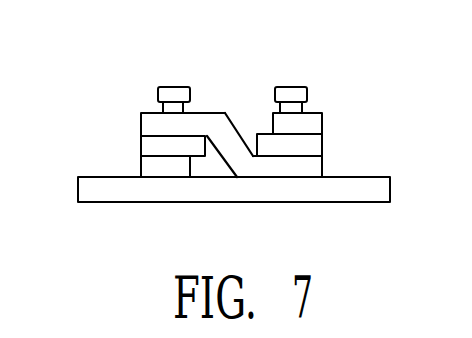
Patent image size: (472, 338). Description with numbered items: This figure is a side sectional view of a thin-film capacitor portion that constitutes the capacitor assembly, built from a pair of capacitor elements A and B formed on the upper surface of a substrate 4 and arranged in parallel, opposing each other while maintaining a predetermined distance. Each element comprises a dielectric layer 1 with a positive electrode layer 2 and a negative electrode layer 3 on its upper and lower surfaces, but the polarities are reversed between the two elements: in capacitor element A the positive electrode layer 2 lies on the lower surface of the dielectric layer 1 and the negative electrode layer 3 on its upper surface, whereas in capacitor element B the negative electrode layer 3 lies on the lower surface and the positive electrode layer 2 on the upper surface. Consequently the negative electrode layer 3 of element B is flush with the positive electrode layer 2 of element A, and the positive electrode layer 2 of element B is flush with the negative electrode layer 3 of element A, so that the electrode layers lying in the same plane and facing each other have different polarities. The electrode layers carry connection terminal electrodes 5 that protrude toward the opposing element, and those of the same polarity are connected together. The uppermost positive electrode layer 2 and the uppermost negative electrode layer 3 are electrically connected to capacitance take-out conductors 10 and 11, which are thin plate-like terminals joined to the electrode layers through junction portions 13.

The dielectric layer 1 is at (239, 139).
The positive electrode layer 2 is at (170, 168).
The negative electrode layer 3 is at (305, 168).
The substrate 4 is at (97, 193).
The connection terminal electrode 5 is at (238, 150).
The capacitance take-out conductor 10 is at (167, 86).
The capacitance take-out conductor 11 is at (293, 87).
The junction portion 13 is at (305, 107).
The capacitor element A is at (130, 156).
The capacitor element B is at (340, 128).